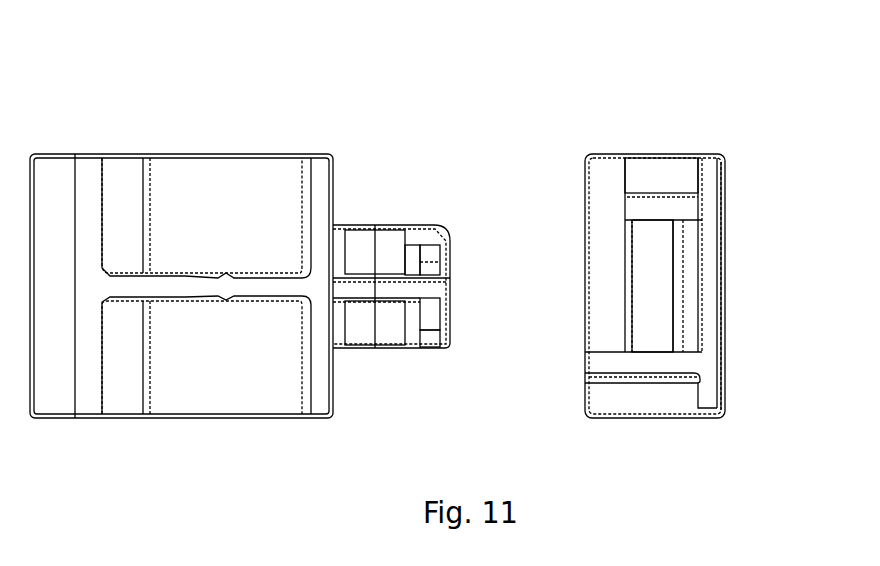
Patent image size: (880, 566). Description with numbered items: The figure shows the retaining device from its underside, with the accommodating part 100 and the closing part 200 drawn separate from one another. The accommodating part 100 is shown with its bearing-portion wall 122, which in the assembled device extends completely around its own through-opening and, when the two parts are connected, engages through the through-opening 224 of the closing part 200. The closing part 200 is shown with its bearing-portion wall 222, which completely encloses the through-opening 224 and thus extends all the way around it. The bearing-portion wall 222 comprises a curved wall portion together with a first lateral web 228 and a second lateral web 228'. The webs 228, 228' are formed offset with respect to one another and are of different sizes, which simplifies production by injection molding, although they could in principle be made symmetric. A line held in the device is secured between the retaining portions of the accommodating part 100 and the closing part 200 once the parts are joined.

The accommodating part 100 is at (185, 143).
The bearing-portion wall 122 is at (366, 282).
The closing part 200 is at (738, 234).
The bearing-portion wall 222 is at (713, 310).
The through-opening 224 is at (657, 287).
The first lateral web 228 is at (639, 455).
The second lateral web 228' is at (673, 110).